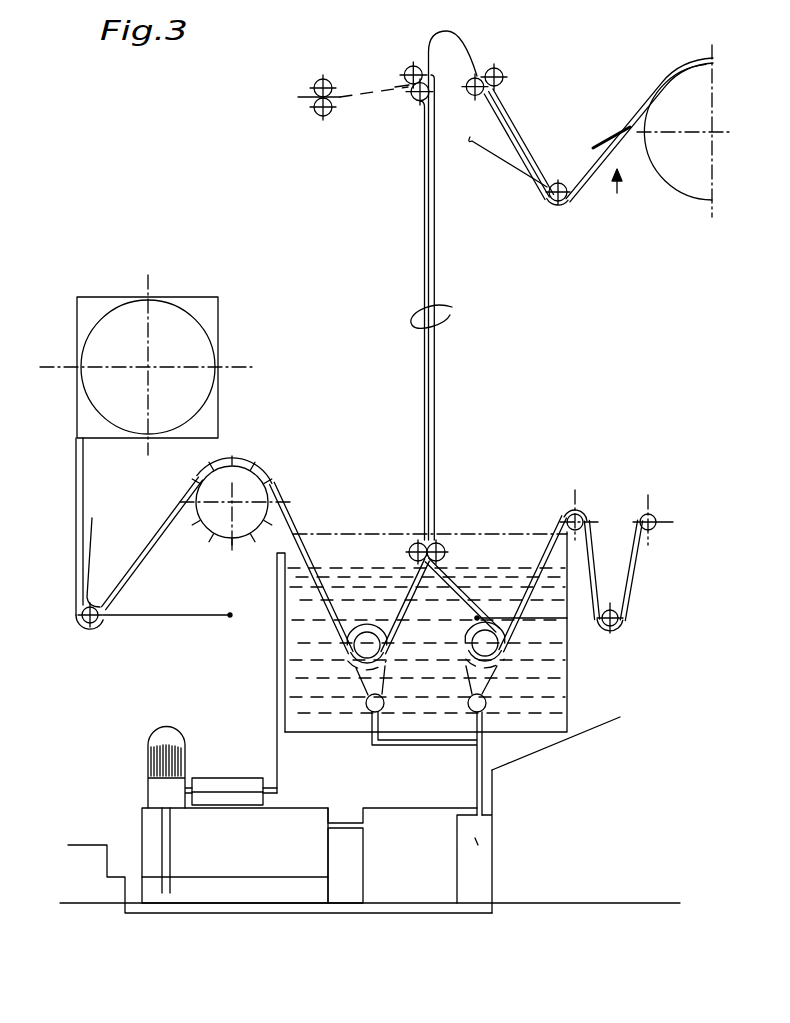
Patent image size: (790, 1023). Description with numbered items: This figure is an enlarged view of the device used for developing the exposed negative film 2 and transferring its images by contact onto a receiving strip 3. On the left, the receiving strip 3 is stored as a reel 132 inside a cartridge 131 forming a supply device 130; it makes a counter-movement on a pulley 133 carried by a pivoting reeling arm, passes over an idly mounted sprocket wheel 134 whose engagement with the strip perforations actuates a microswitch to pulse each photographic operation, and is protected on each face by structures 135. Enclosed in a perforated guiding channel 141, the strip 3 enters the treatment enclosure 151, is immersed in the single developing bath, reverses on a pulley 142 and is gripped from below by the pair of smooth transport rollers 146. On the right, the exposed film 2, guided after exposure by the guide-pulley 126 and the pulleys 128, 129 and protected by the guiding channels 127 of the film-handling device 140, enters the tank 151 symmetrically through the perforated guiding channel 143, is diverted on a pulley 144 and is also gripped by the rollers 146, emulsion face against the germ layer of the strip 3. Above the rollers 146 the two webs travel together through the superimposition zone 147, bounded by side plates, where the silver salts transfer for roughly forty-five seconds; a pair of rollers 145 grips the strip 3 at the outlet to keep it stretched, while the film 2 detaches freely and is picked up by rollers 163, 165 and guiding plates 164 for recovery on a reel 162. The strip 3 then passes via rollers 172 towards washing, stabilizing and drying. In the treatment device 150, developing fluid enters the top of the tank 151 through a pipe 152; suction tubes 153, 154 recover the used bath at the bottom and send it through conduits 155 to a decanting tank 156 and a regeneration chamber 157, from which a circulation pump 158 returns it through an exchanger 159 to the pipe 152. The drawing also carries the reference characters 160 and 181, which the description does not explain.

The film 2 is at (433, 240).
The receiving strip 3 is at (77, 563).
The guide-pulley 126 is at (657, 518).
The guiding channels 127 is at (640, 530).
The pulley 128 is at (619, 625).
The pulley 129 is at (570, 513).
The device 130 is at (66, 446).
The cartridge 131 is at (190, 297).
The reel 132 is at (101, 319).
The pulley 133 is at (83, 624).
The sprocket wheel 134 is at (247, 485).
The structures 135 is at (91, 530).
The device 140 is at (438, 372).
The perforated guiding channel 141 is at (328, 597).
The pulley 142 is at (365, 640).
The perforated guiding channel 143 is at (492, 604).
The pulley 144 is at (473, 633).
The pair of rollers 145 is at (417, 65).
The pair of transport rollers 146 is at (446, 540).
The superimposition zone 147 is at (450, 309).
The device 150 is at (256, 733).
The treatment enclosure 151 is at (569, 687).
The pipe 152 is at (277, 676).
The suction tube 153 is at (472, 668).
The suction tube 154 is at (468, 705).
The conduits 155 is at (476, 772).
The decanting tank 156 is at (457, 857).
The regeneration chamber 157 is at (305, 808).
The circulation pump 158 is at (148, 758).
The exchanger 159 is at (226, 779).
The direction of travel 160 is at (621, 198).
The reel 162 is at (684, 200).
The rollers 163 is at (495, 67).
The guiding plates 164 is at (533, 122).
The rollers 165 is at (561, 206).
The rollers 172 is at (314, 106).
The support strut 181 is at (522, 760).